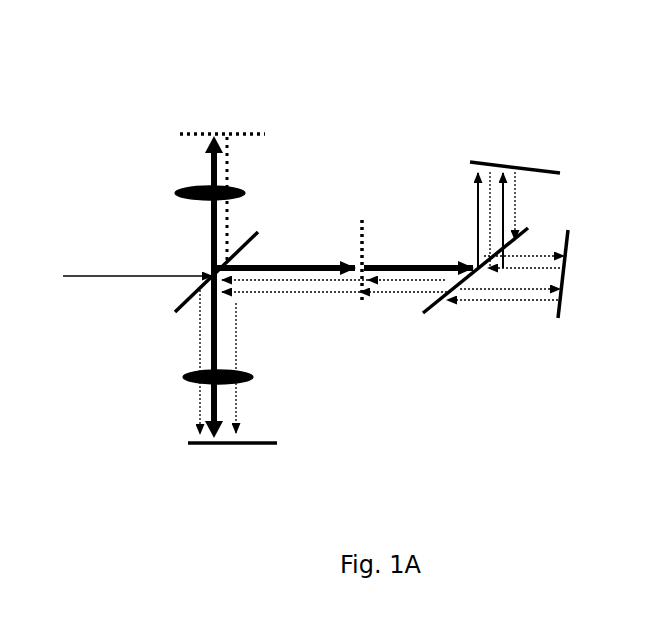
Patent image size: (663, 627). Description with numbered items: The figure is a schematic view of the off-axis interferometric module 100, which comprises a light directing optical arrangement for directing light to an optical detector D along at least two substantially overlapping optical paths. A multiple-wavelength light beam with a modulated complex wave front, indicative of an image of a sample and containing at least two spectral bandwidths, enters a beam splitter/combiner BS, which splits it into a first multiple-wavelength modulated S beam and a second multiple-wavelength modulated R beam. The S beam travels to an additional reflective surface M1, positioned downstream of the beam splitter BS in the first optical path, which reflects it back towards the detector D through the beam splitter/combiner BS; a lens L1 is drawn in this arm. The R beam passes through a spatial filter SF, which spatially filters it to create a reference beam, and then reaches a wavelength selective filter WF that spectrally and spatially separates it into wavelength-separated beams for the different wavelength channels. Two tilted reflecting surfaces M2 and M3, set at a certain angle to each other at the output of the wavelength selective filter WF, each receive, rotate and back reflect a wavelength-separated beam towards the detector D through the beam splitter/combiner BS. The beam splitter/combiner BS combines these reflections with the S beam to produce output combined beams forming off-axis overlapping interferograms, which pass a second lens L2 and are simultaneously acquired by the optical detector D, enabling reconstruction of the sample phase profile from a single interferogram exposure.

The off-axis interferometric module 100 is at (162, 108).
The additional reflective surface M1 is at (222, 119).
The reflecting surface M2 is at (515, 201).
The reflecting surface M3 is at (525, 274).
The first lens L1 is at (225, 195).
The second lens L2 is at (233, 380).
The beam splitter/combiner BS is at (216, 271).
The spatial filter SF is at (358, 237).
The wavelength selective filter WF is at (475, 270).
The S beam S is at (197, 287).
The R beam R is at (343, 252).
The optical detector D is at (232, 457).